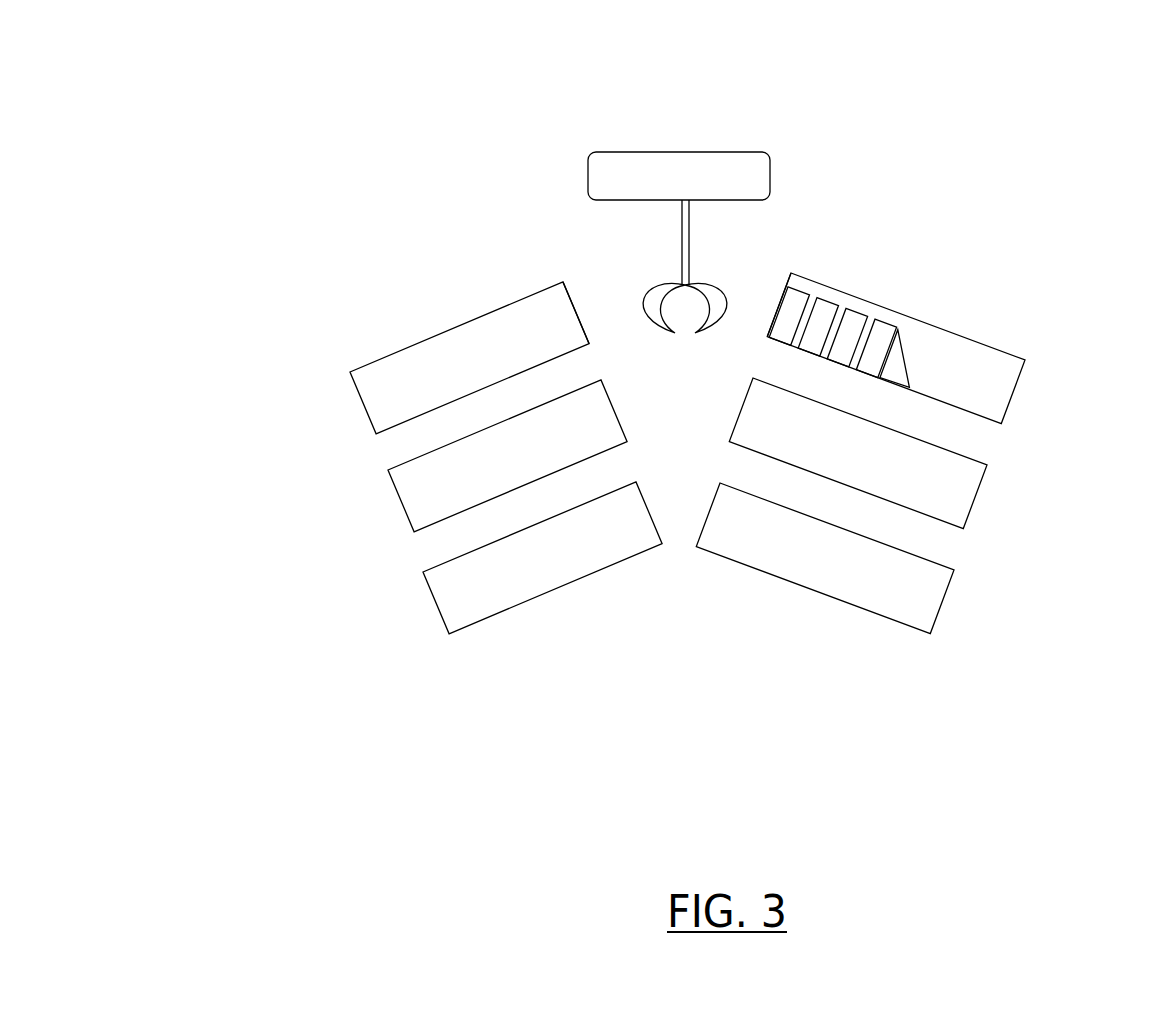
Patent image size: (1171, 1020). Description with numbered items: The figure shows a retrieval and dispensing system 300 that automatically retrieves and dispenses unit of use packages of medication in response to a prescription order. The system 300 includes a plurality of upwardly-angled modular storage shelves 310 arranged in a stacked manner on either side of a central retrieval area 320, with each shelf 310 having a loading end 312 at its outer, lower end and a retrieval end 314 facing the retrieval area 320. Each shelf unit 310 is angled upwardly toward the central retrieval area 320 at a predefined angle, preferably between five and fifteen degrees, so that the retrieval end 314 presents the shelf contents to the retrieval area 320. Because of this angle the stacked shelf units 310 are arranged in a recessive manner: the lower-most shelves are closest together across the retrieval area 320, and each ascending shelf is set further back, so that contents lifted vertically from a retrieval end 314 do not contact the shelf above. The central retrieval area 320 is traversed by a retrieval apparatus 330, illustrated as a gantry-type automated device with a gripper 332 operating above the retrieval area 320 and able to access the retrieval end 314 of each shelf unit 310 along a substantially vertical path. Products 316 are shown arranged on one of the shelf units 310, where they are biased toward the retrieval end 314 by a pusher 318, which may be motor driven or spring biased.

The retrieval and dispensing system 300 is at (668, 353).
The modular storage shelf 310 is at (679, 263).
The loading end 312 is at (690, 391).
The retrieval end 314 is at (694, 218).
The products 316 is at (882, 290).
The pusher 318 is at (985, 337).
The central retrieval area 320 is at (690, 414).
The retrieval apparatus 330 is at (672, 179).
The gripper 332 is at (647, 284).